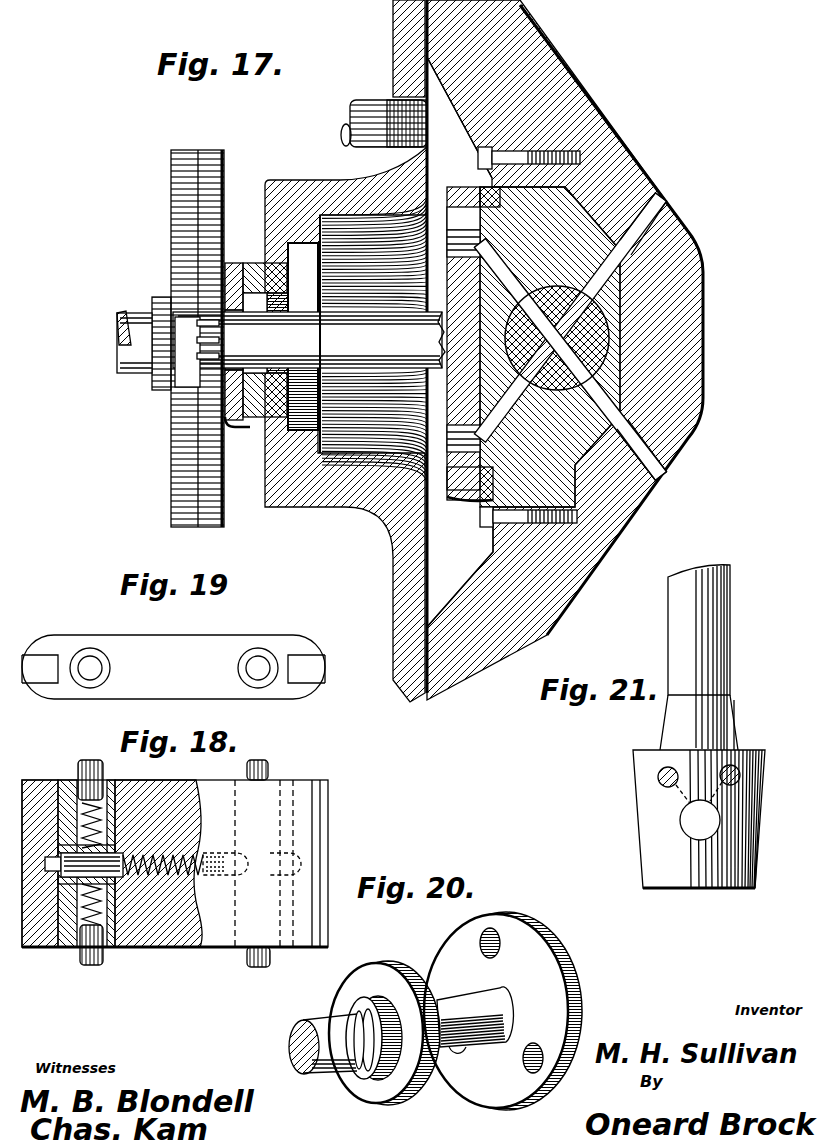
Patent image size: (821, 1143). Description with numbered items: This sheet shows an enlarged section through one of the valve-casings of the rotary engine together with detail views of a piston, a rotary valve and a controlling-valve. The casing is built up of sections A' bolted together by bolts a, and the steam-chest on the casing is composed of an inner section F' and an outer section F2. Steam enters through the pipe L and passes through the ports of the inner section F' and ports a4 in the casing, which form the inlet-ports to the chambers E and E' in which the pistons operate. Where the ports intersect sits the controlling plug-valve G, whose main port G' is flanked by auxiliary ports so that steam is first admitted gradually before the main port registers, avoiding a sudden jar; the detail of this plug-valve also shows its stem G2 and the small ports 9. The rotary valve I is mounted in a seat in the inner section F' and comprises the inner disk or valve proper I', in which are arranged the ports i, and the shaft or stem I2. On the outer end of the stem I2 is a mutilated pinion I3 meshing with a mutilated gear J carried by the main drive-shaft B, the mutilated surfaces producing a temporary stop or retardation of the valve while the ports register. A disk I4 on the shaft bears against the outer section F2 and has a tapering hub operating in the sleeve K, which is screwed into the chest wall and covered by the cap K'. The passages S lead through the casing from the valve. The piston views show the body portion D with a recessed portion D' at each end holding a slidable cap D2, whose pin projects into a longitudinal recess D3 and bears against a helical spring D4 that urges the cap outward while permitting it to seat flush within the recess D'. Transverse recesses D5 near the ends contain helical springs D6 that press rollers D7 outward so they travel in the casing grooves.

In FIG. 17, the inner section F' is at (421, 346).
In FIG. 17, the pipe L is at (363, 95).
In FIG. 17, the section A' is at (565, 350).
In FIG. 17, the chamber E' is at (591, 256).
In FIG. 17, the port a4 is at (650, 200).
In FIG. 17, the outer section F2 is at (292, 182).
In FIG. 17, the mutilated gear J is at (171, 220).
In FIG. 17, the cap K' is at (261, 323).
In FIG. 17, the mutilated pinion I3 is at (187, 287).
In FIG. 17, the disk I4 is at (303, 336).
In FIG. 20, the disk I4 is at (390, 1093).
In FIG. 17, the rotary valve I is at (373, 340).
In FIG. 17, the ports i is at (460, 243).
In FIG. 20, the ports i is at (483, 950).
In FIG. 17, the passage S is at (587, 270).
In FIG. 17, the shaft I2 is at (309, 337).
In FIG. 17, the controlling plug-valve G is at (607, 360).
In FIG. 21, the controlling plug-valve G is at (699, 833).
In FIG. 17, the main drive-shaft B is at (120, 348).
In FIG. 17, the bolts a is at (704, 367).
In FIG. 17, the inner disk I' is at (445, 338).
In FIG. 20, the inner disk I' is at (503, 1011).
In FIG. 17, the sleeve K is at (240, 364).
In FIG. 17, the chambers E is at (625, 516).
In FIG. 19, the body portion D is at (173, 667).
In FIG. 18, the body portion D is at (175, 890).
In FIG. 19, the recessed portion D' is at (190, 659).
In FIG. 19, the roller D7 is at (258, 660).
In FIG. 18, the roller D7 is at (78, 770).
In FIG. 19, the cap D2 is at (313, 670).
In FIG. 18, the cap D2 is at (333, 821).
In FIG. 18, the helical springs D6 is at (110, 817).
In FIG. 18, the longitudinal recess D3 is at (188, 836).
In FIG. 18, the helical spring D4 is at (160, 920).
In FIG. 18, the transverse recesses D5 is at (117, 947).
In FIG. 21, the valve stem G2 is at (717, 638).
In FIG. 21, the holes 9 is at (657, 782).
In FIG. 21, the main port G' is at (657, 823).